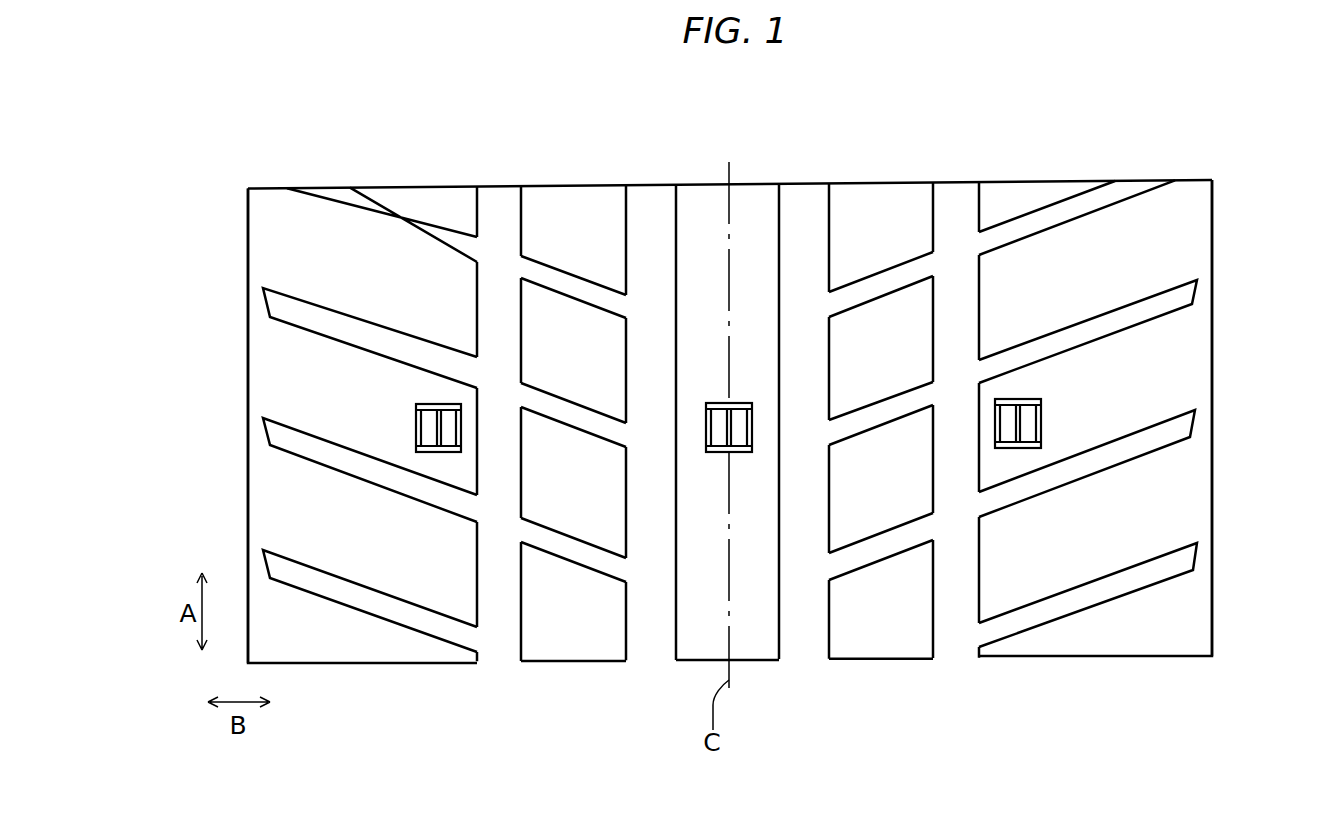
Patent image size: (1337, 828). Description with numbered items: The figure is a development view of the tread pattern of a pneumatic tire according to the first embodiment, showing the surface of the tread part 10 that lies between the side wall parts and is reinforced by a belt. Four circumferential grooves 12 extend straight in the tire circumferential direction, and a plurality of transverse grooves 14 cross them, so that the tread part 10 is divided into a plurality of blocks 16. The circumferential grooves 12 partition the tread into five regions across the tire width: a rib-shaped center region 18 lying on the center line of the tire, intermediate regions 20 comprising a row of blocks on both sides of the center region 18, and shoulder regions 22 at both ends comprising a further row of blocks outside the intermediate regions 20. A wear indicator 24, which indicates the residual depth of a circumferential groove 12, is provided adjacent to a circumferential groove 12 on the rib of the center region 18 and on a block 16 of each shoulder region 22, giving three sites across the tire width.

The tread part 10 is at (722, 115).
The circumferential grooves 12 is at (500, 205).
The transverse grooves 14 is at (1107, 327).
The blocks 16 is at (440, 595).
The center region 18 is at (765, 643).
The intermediate regions 20 is at (562, 638).
The shoulder regions 22 is at (368, 645).
The wear indicator 24 is at (413, 420).